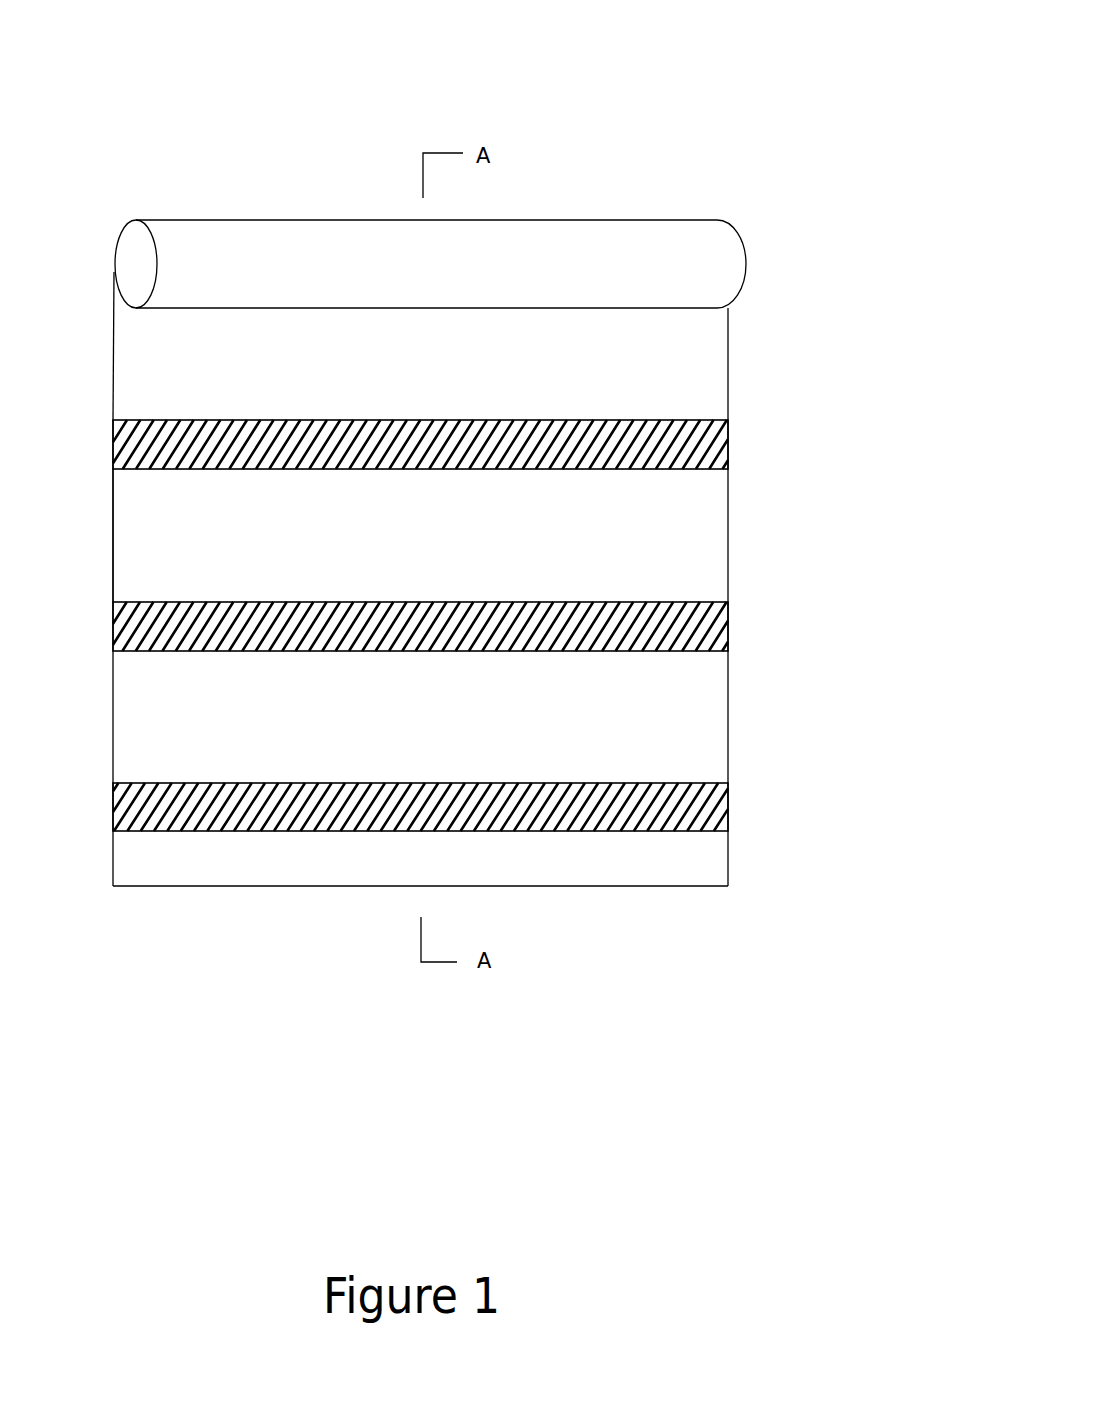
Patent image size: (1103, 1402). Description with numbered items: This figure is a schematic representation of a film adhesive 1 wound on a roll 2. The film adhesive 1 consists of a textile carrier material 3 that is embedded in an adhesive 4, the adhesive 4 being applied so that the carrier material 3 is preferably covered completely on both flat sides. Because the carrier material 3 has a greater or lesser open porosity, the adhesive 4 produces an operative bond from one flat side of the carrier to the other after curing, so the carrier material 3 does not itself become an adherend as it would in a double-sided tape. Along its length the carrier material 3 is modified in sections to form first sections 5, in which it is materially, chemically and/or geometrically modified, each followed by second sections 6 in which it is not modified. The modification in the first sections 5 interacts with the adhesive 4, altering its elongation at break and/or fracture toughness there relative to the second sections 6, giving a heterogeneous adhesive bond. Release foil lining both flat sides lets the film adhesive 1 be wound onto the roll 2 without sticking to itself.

The film adhesive 1 is at (688, 115).
The roll 2 is at (765, 267).
The textile carrier material 3 is at (717, 560).
The adhesive 4 is at (697, 350).
The first sections 5 is at (103, 469).
The second sections 6 is at (90, 420).